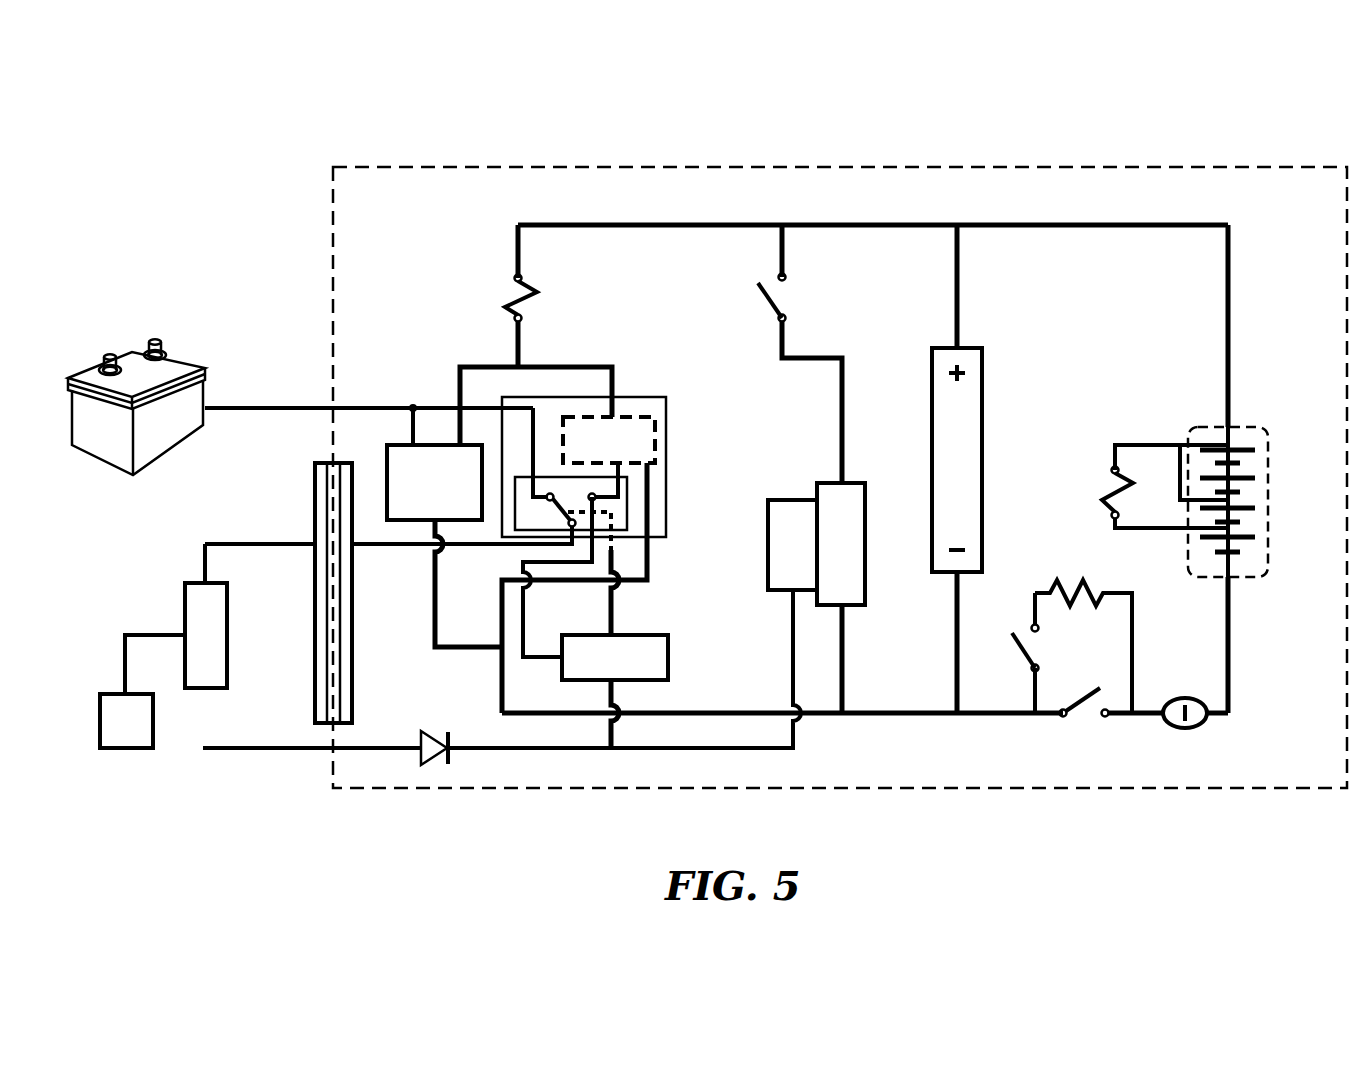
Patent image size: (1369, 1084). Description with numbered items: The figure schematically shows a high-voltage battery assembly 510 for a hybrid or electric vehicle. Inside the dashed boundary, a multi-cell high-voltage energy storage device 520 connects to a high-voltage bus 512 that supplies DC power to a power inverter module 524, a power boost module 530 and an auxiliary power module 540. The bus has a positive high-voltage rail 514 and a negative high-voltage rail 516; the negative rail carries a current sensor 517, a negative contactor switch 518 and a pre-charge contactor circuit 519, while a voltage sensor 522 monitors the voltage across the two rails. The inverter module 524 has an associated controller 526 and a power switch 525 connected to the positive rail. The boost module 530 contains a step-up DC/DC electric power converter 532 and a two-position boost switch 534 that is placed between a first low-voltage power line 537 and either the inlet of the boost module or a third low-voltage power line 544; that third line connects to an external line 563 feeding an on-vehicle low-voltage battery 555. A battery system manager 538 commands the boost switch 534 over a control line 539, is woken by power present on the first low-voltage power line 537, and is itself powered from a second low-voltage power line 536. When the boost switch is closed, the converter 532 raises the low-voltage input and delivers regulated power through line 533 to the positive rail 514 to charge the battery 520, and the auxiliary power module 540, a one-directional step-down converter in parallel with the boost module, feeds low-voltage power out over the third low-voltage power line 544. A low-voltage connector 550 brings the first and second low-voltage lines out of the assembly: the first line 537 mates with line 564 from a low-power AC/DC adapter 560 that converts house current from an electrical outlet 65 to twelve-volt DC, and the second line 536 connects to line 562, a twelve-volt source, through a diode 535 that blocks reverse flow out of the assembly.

The high-voltage battery assembly 510 is at (1118, 162).
The high-voltage bus 512 is at (1238, 290).
The positive high-voltage rail 514 is at (1093, 230).
The negative high-voltage rail 516 is at (890, 718).
The current sensor 517 is at (1200, 728).
The negative contactor switch 518 is at (1083, 718).
The pre-charge contactor circuit 519 is at (1068, 570).
The multi-cell high-voltage energy storage device 520 is at (1243, 425).
The voltage sensor 522 is at (981, 448).
The power inverter module 524 is at (866, 570).
The power switch 525 is at (783, 298).
The controller 526 is at (793, 498).
The power boost module 530 is at (653, 393).
The step-up DC/DC electric power converter 532 is at (609, 440).
The line 533 is at (568, 366).
The boost switch 534 is at (629, 505).
The diode 535 is at (433, 757).
The second low-voltage power line 536 is at (463, 742).
The first low-voltage power line 537 is at (367, 547).
The battery system manager 538 is at (670, 657).
The control line 539 is at (616, 608).
The auxiliary power module 540 is at (440, 442).
The third low-voltage power line 544 is at (352, 405).
The low-voltage connector 550 is at (327, 725).
The on-vehicle low-voltage battery 555 is at (93, 458).
The low-power AC/DC adapter 560 is at (185, 590).
The line 562 is at (285, 745).
The external line 563 is at (287, 405).
The line 564 is at (275, 543).
The electrical outlet 65 is at (126, 721).